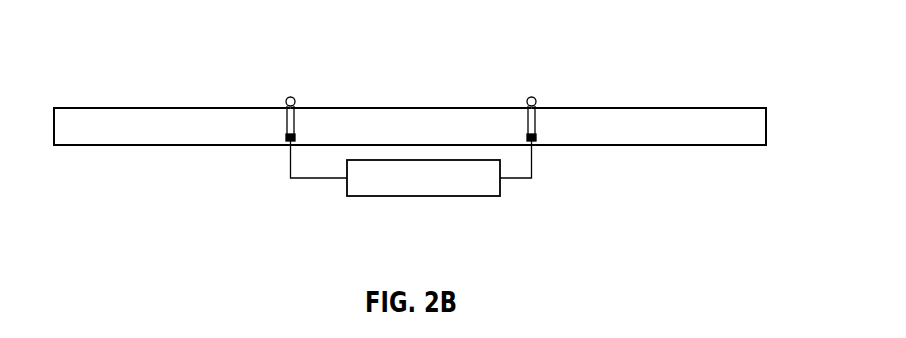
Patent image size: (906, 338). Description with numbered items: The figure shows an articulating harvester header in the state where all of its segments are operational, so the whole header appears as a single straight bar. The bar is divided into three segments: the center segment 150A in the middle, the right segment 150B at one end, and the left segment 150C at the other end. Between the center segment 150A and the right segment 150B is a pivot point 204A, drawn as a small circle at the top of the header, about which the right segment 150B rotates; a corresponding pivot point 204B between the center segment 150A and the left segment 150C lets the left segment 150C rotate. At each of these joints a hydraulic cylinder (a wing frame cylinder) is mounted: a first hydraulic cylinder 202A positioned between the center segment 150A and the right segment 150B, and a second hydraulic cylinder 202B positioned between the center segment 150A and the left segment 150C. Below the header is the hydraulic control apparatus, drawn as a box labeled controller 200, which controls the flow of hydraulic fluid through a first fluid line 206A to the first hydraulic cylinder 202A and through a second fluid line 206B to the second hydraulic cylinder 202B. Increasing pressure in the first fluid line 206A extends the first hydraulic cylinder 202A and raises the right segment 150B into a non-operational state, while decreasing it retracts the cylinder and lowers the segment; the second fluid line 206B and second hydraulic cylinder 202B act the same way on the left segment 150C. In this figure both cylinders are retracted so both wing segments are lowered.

The center segment 150A is at (412, 108).
The right segment 150B is at (162, 108).
The left segment 150C is at (650, 108).
The hydraulic control apparatus 200 is at (437, 197).
The first hydraulic cylinder 202A is at (284, 139).
The second hydraulic cylinder 202B is at (537, 139).
The pivot point 204A is at (291, 97).
The pivot point 204B is at (532, 97).
The first fluid line 206A is at (332, 179).
The second fluid line 206B is at (503, 180).